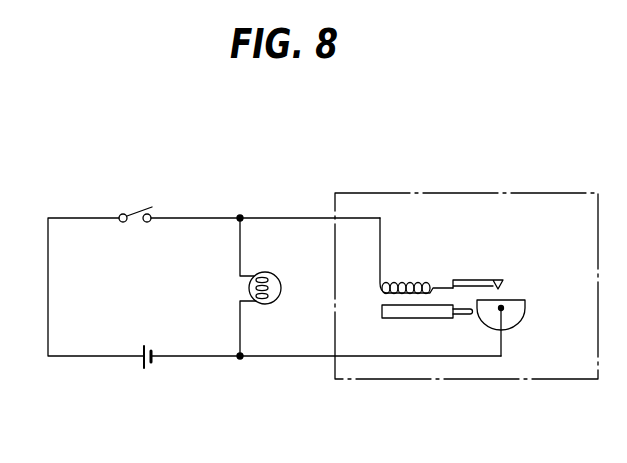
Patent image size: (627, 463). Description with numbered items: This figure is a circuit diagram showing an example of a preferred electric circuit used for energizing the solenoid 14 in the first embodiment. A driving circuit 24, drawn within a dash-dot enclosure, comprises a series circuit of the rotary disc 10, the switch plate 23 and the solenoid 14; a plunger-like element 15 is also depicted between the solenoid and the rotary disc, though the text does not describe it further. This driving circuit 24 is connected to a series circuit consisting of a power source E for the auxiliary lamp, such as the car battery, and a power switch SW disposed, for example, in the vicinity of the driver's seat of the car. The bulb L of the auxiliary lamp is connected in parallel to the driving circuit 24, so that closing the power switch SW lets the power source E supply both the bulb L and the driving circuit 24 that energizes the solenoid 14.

The power switch SW is at (138, 204).
The bulb L is at (270, 267).
The power source E is at (152, 373).
The driving circuit 24 is at (437, 192).
The solenoid 14 is at (408, 282).
The switch plate 23 is at (483, 277).
The plunger 15 is at (448, 320).
The rotary disc 10 is at (520, 308).